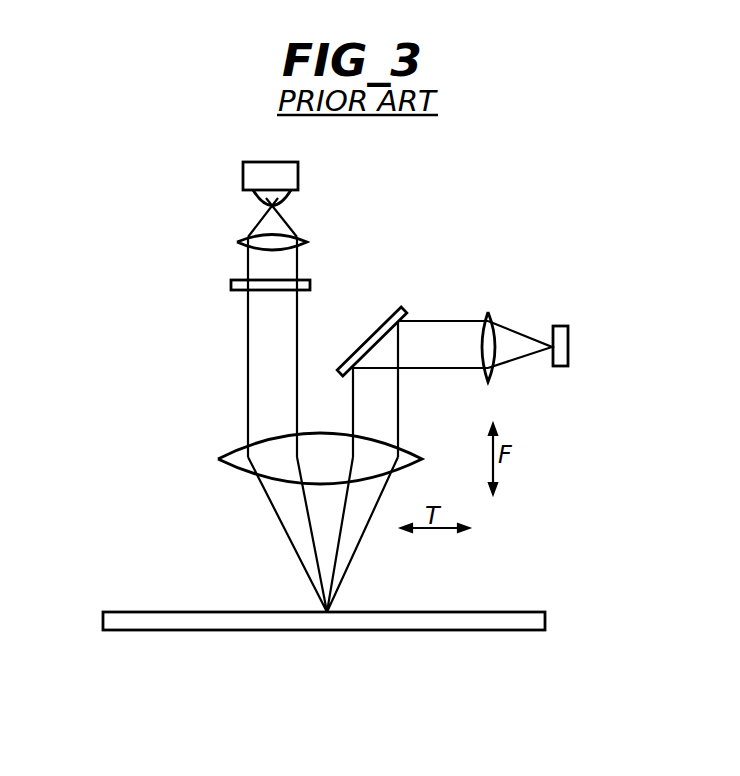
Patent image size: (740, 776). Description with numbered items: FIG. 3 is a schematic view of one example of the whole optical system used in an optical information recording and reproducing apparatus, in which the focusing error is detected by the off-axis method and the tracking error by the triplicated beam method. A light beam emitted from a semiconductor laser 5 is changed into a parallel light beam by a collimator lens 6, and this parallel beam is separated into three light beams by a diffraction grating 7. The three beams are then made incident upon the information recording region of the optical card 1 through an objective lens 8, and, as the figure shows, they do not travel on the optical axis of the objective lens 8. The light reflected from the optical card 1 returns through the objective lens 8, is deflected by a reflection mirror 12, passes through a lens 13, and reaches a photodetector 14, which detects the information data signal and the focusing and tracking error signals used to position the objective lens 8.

The optical card 1 is at (495, 612).
The semiconductor laser 5 is at (290, 174).
The collimator lens 6 is at (307, 242).
The diffraction grating 7 is at (310, 285).
The objective lens 8 is at (422, 459).
The reflection mirror 12 is at (405, 308).
The lens 13 is at (488, 312).
The photodetector 14 is at (558, 326).